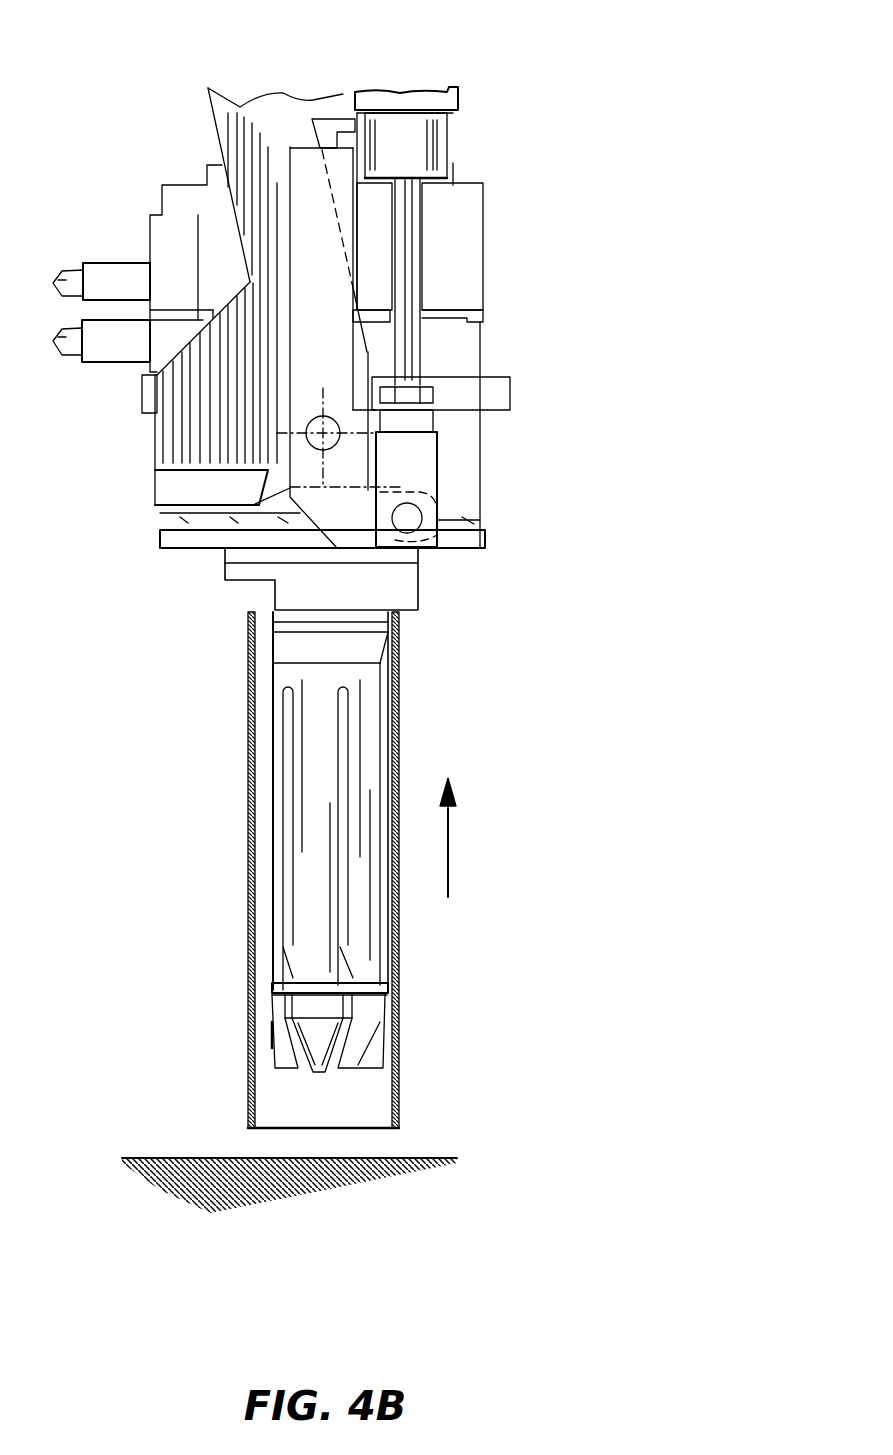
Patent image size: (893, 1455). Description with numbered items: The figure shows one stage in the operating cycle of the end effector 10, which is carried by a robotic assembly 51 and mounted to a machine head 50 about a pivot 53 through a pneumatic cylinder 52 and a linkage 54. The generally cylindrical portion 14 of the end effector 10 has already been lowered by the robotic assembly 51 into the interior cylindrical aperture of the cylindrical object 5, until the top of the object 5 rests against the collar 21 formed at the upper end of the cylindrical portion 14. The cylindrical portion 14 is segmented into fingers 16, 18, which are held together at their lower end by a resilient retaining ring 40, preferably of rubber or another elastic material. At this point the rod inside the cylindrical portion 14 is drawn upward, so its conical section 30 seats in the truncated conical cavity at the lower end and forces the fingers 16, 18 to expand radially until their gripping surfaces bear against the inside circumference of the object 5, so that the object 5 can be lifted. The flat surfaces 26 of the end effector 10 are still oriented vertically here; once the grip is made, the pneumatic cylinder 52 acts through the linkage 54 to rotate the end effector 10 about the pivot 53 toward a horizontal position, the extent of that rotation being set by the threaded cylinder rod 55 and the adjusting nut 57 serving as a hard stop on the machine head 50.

The end effector 10 is at (198, 692).
The cylindrical object 5 is at (400, 728).
The cylindrical portion 14 is at (313, 903).
The finger 16 is at (380, 1003).
The finger 18 is at (275, 1040).
The collar 21 is at (413, 617).
The flat surfaces 26 is at (272, 840).
The conical section 30 is at (350, 1027).
The resilient retaining ring 40 is at (278, 990).
The machine head 50 is at (455, 485).
The robotic assembly 51 is at (260, 162).
The pneumatic cylinder 52 is at (412, 130).
The pivot 53 is at (312, 440).
The linkage 54 is at (313, 182).
The threaded cylinder rod 55 is at (410, 275).
The adjusting nut 57 is at (412, 415).